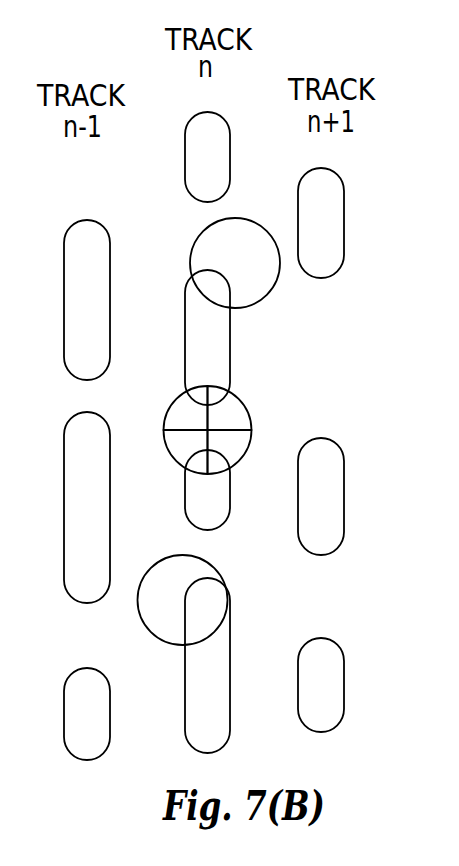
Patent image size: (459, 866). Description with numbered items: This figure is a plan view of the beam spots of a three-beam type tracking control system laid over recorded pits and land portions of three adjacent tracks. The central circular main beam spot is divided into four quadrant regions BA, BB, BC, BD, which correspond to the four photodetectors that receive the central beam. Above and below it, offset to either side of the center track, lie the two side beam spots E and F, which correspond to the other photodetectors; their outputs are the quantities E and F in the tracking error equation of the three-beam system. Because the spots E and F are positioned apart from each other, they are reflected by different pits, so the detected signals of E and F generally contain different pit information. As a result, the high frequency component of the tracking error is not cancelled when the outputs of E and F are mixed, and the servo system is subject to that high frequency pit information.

The laser beam spot E is at (259, 300).
The laser beam spot F is at (143, 624).
The main beam spot quadrant BA is at (178, 396).
The main beam spot quadrant BB is at (236, 396).
The main beam spot quadrant BC is at (245, 455).
The main beam spot quadrant BD is at (163, 447).